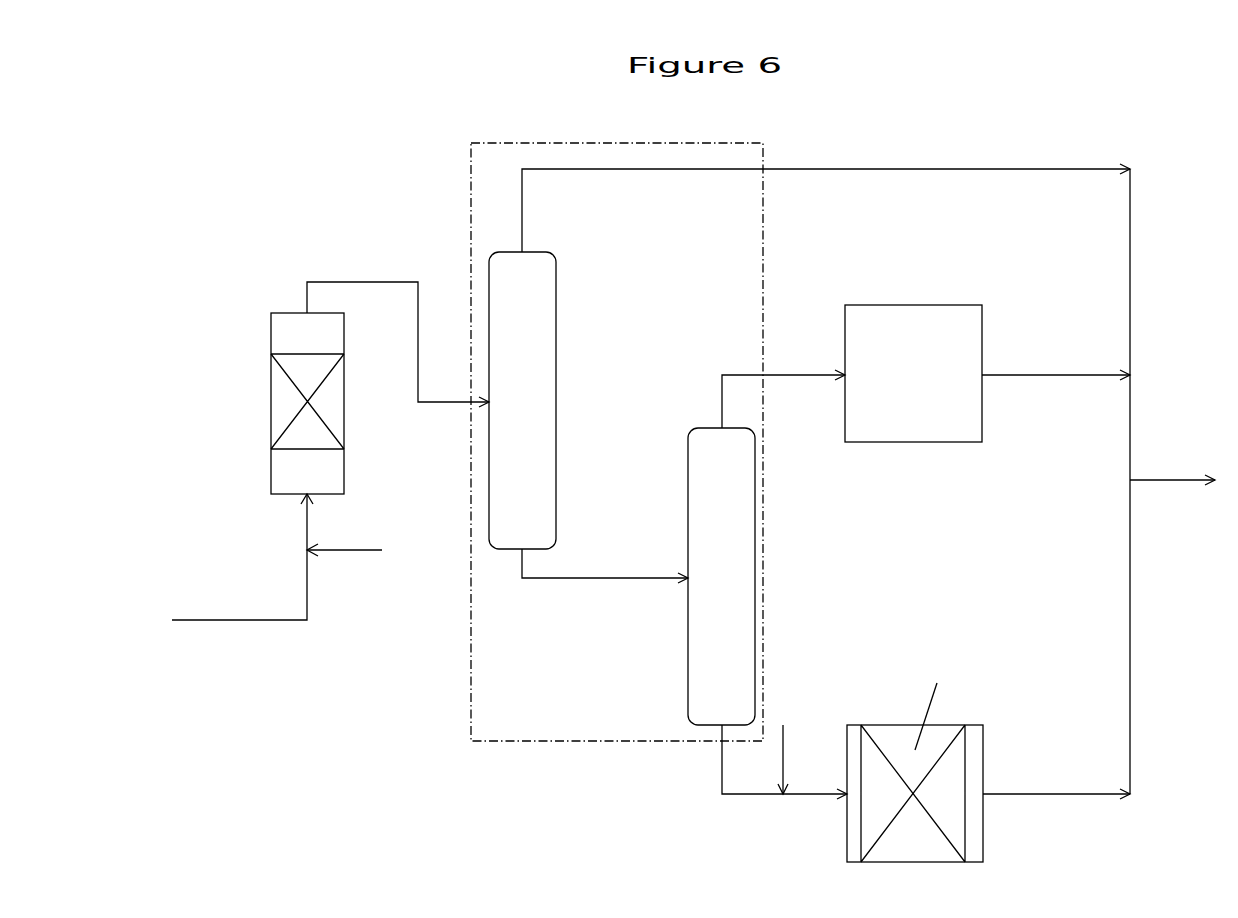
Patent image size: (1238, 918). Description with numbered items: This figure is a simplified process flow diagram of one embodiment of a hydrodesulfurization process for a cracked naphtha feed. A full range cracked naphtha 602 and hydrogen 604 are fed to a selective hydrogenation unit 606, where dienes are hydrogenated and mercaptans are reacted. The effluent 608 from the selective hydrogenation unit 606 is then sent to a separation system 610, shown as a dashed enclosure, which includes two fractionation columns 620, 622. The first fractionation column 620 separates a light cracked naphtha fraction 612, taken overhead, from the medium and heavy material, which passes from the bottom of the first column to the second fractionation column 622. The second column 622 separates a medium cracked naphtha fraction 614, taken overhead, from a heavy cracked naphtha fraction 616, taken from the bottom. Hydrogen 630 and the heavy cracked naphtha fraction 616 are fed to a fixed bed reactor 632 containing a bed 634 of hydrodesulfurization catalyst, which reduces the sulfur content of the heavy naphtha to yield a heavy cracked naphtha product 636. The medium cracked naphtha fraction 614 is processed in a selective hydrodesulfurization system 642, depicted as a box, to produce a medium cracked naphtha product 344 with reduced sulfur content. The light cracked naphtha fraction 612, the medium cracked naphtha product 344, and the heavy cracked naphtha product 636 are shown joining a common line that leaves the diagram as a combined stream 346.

The full range cracked naphtha 602 is at (238, 614).
The hydrogen 604 is at (371, 542).
The selective hydrogenation unit 606 is at (284, 309).
The effluent 608 is at (371, 275).
The separation system 610 is at (506, 135).
The light cracked naphtha fraction 612 is at (835, 159).
The medium cracked naphtha fraction 614 is at (714, 383).
The heavy cracked naphtha fraction 616 is at (717, 779).
The fractionation column 620 is at (549, 249).
The fractionation column 622 is at (691, 430).
The hydrogen 630 is at (779, 766).
The fixed bed reactor 632 is at (853, 717).
The bed of hydrodesulfurization catalyst 634 is at (944, 708).
The heavy cracked naphtha product 636 is at (1090, 785).
The selective hydrodesulfurization system 642 is at (908, 297).
The medium cracked naphtha product 344 is at (1060, 369).
The combined product stream 346 is at (1193, 474).